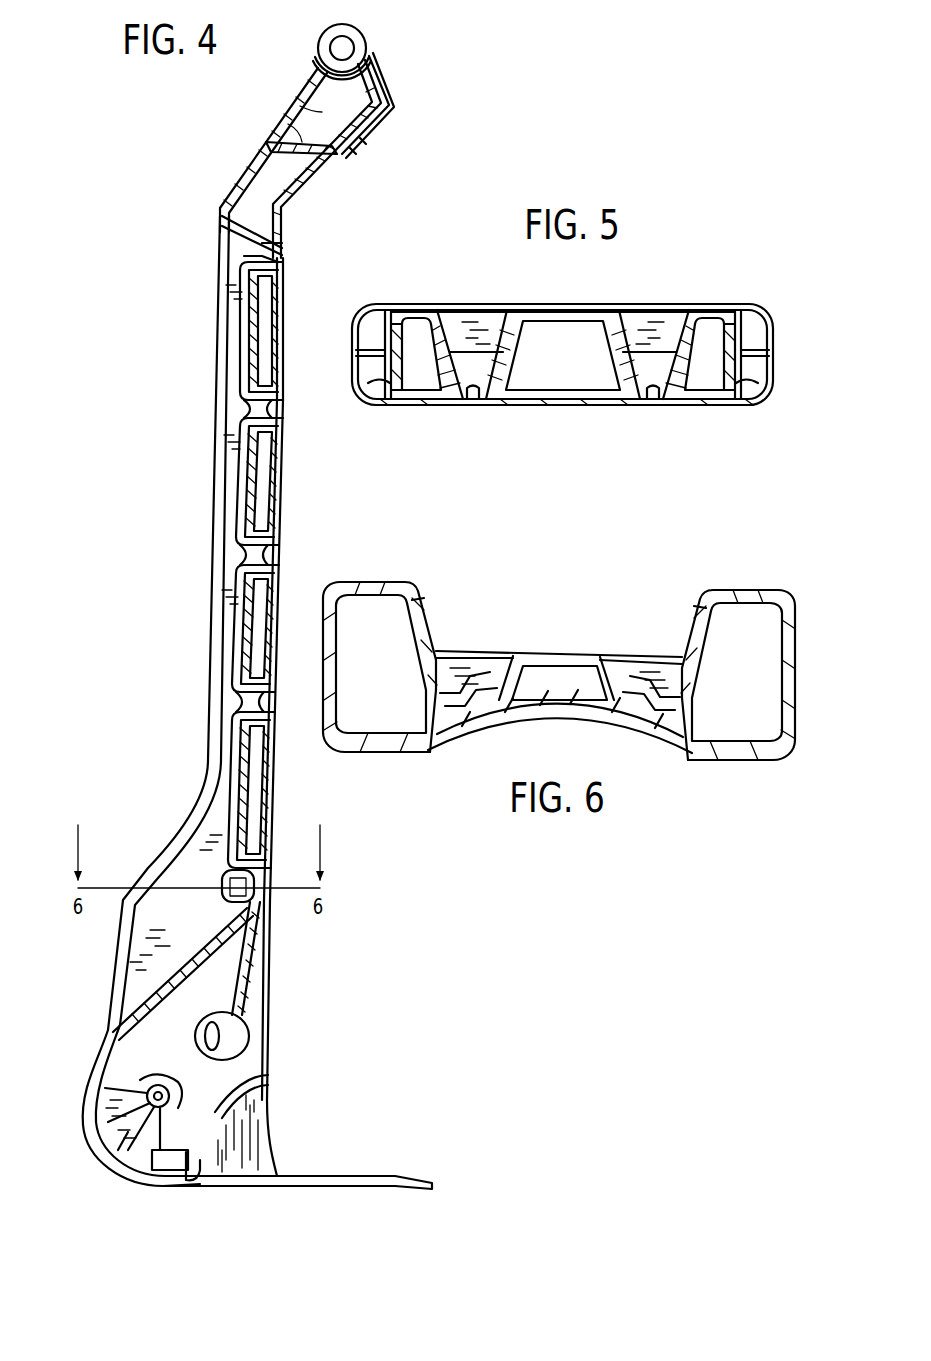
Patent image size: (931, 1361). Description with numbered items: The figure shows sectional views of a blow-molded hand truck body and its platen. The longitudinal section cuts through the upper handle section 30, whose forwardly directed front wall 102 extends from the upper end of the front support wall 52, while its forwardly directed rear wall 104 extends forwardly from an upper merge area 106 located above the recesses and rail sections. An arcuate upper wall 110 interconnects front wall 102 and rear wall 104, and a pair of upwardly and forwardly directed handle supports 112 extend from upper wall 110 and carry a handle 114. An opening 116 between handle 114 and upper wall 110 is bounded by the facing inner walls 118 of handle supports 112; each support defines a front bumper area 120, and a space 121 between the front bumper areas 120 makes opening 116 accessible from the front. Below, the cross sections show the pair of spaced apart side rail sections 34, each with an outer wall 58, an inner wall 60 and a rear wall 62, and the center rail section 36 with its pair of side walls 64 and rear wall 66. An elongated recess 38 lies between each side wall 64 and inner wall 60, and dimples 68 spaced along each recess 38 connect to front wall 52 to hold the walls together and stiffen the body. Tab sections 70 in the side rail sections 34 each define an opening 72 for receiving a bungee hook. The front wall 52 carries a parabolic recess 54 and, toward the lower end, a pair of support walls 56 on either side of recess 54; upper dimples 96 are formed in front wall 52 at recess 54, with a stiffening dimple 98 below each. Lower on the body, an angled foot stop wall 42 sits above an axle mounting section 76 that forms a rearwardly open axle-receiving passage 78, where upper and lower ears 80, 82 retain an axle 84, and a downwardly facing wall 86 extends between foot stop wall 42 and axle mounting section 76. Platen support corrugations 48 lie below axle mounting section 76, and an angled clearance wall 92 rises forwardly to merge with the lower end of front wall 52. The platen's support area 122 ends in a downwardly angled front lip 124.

In FIG. 4, the upper handle section 30 is at (432, 82).
In FIG. 5, the side rail sections 34 is at (414, 298).
In FIG. 5, the center rail section 36 is at (580, 297).
In FIG. 5, the elongated recess 38 is at (487, 320).
In FIG. 4, the angled foot stop wall 42 is at (185, 992).
In FIG. 4, the platen support corrugations 48 is at (142, 1163).
In FIG. 4, the front support wall 52 is at (282, 478).
In FIG. 5, the front support wall 52 is at (552, 412).
In FIG. 6, the front support wall 52 is at (526, 725).
In FIG. 6, the parabolic recess 54 is at (582, 720).
In FIG. 6, the support walls 56 is at (380, 758).
In FIG. 5, the outer wall 58 is at (378, 383).
In FIG. 6, the outer wall 58 is at (792, 660).
In FIG. 5, the inner wall 60 is at (448, 325).
In FIG. 6, the inner wall 60 is at (420, 630).
In FIG. 5, the rear wall 62 is at (402, 312).
In FIG. 5, the side walls 64 is at (508, 312).
In FIG. 5, the rear wall 66 is at (556, 312).
In FIG. 4, the dimples 68 is at (256, 262).
In FIG. 5, the dimples 68 is at (476, 400).
In FIG. 5, the tab sections 70 is at (356, 345).
In FIG. 5, the opening 72 is at (370, 340).
In FIG. 4, the axle mounting section 76 is at (240, 1080).
In FIG. 4, the axle-receiving passage 78 is at (140, 1105).
In FIG. 4, the upper ears 80 is at (145, 1092).
In FIG. 4, the lower ears 82 is at (132, 1134).
In FIG. 4, the axle 84 is at (172, 1094).
In FIG. 4, the downwardly facing wall 86 is at (146, 1080).
In FIG. 4, the angled clearance wall 92 is at (225, 1146).
In FIG. 4, the upper dimples 96 is at (266, 915).
In FIG. 4, the stiffening dimple 98 is at (224, 1036).
In FIG. 4, the front wall 102 is at (312, 172).
In FIG. 4, the rear wall 104 is at (234, 182).
In FIG. 4, the upper merge area 106 is at (219, 216).
In FIG. 4, the arcuate upper wall 110 is at (284, 128).
In FIG. 4, the handle supports 112 is at (381, 134).
In FIG. 4, the handle 114 is at (352, 30).
In FIG. 4, the opening 116 is at (322, 112).
In FIG. 4, the inner walls 118 is at (382, 118).
In FIG. 4, the front bumper area 120 is at (391, 102).
In FIG. 4, the space 121 is at (380, 74).
In FIG. 4, the support area 122 is at (350, 1175).
In FIG. 4, the front lip 124 is at (415, 1185).